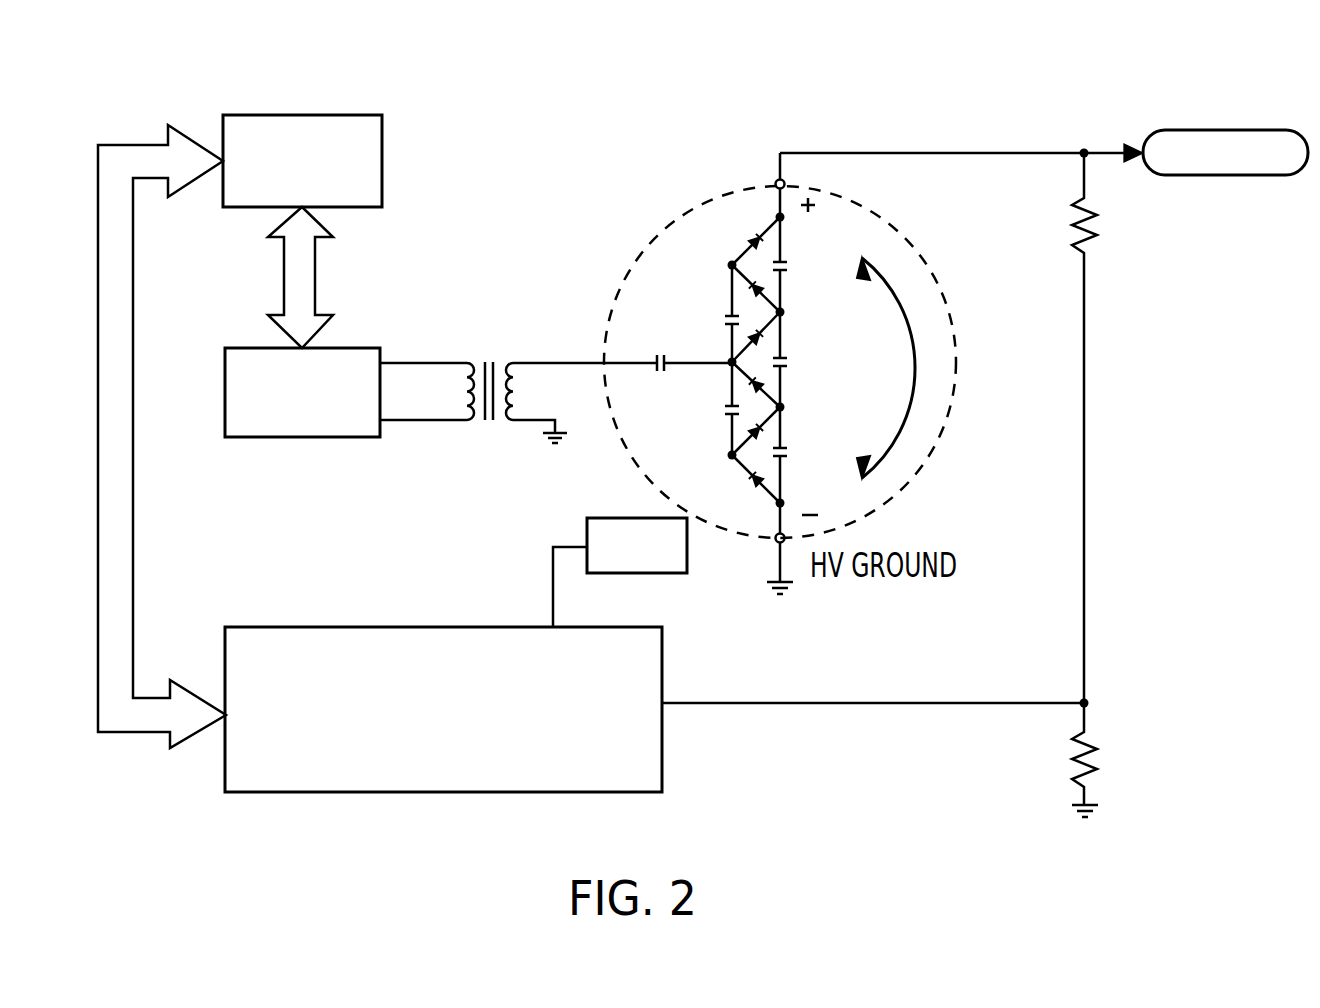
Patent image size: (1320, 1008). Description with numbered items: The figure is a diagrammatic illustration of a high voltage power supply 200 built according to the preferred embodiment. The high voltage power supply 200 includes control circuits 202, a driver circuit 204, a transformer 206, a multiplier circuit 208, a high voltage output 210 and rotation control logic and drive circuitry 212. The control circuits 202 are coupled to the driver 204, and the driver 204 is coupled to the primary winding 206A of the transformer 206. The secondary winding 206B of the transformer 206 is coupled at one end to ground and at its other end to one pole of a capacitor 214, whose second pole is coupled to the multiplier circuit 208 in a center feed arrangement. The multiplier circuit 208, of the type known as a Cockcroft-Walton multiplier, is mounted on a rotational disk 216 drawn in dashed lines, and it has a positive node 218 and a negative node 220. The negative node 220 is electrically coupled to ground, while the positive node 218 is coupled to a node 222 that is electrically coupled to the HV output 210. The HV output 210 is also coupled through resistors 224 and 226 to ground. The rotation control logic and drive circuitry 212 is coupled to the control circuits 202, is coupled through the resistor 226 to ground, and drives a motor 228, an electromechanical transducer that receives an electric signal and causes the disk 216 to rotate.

The high voltage power supply 200 is at (1152, 423).
The control circuits 202 is at (382, 160).
The driver circuit 204 is at (320, 438).
The transformer 206 is at (481, 393).
The primary winding 206A is at (470, 420).
The secondary winding 206B is at (510, 362).
The multiplier circuit 208 is at (735, 218).
The high voltage output 210 is at (1207, 130).
The rotation control logic and drive circuitry 212 is at (453, 793).
The capacitor 214 is at (660, 355).
The rotational disk 216 is at (873, 210).
The positive node 218 is at (779, 200).
The negative node 220 is at (773, 520).
The node 222 is at (784, 173).
The resistor 224 is at (1097, 232).
The resistor 226 is at (1097, 767).
The motor 228 is at (667, 575).